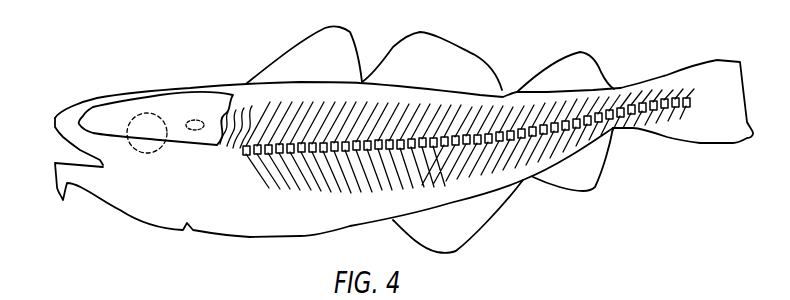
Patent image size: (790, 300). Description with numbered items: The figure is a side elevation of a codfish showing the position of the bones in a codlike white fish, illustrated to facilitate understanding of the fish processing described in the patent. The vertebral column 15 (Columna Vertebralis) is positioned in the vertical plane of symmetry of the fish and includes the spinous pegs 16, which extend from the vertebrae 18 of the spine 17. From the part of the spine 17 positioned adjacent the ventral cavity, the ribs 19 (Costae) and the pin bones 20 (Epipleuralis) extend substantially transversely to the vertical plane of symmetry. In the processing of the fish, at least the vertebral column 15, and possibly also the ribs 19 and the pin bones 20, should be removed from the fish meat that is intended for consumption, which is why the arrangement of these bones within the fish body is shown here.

The vertebral column 15 is at (523, 180).
The spinous pegs 16 is at (363, 83).
The spine 17 is at (708, 100).
The vertebrae 18 is at (501, 130).
The ribs 19 is at (330, 183).
The pin bones 20 is at (259, 118).